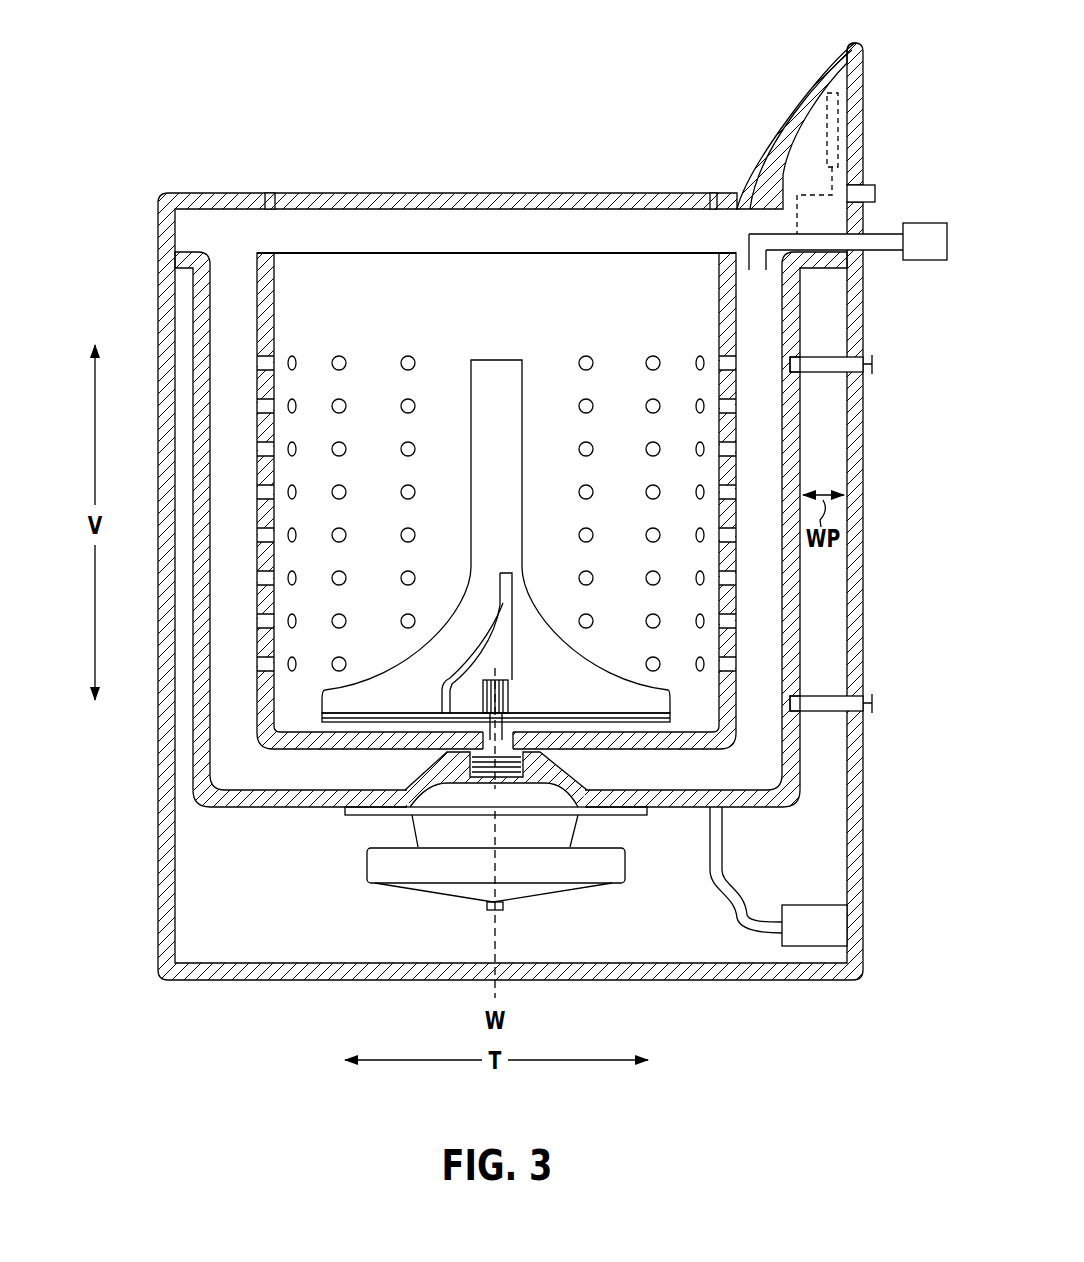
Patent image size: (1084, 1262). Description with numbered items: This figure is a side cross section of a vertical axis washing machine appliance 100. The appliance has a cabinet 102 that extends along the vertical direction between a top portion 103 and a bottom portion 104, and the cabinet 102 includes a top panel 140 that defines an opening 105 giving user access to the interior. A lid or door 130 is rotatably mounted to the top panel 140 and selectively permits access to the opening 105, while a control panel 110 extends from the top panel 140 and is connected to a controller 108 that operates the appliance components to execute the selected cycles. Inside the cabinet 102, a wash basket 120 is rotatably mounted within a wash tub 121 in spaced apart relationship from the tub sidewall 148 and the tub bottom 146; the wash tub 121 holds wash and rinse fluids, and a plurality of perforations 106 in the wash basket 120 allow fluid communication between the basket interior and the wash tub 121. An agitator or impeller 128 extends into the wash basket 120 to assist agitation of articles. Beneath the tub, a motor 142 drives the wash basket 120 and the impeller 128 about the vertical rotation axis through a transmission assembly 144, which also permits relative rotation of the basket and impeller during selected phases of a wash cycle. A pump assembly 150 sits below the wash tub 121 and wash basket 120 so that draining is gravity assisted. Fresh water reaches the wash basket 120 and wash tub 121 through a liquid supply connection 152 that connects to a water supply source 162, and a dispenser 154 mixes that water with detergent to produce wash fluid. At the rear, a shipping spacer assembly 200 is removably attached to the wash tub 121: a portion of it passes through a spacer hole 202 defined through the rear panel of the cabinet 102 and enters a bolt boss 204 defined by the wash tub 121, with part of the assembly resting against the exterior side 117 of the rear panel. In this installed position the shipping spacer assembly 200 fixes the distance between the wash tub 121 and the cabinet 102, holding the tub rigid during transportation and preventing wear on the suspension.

The washing machine appliance 100 is at (225, 72).
The cabinet 102 is at (168, 287).
The top portion 103 is at (143, 204).
The bottom portion 104 is at (143, 977).
The opening 105 is at (580, 255).
The perforations 106 is at (420, 354).
The controller 108 is at (843, 107).
The control panel 110 is at (788, 87).
The exterior side 117 is at (868, 558).
The wash basket 120 is at (257, 278).
The wash tub 121 is at (190, 750).
The agitator or impeller 128 is at (503, 365).
The lid or door 130 is at (383, 199).
The top panel 140 is at (200, 192).
The motor 142 is at (615, 870).
The transmission assembly 144 is at (560, 815).
The tub bottom 146 is at (280, 808).
The tub sidewall 148 is at (784, 597).
The pump assembly 150 is at (760, 934).
The liquid supply connection 152 is at (806, 242).
The dispenser 154 is at (738, 230).
The water supply source 162 is at (925, 241).
The shipping spacer assembly 200 is at (842, 553).
The spacer hole 202 is at (852, 367).
The bolt boss 204 is at (786, 362).